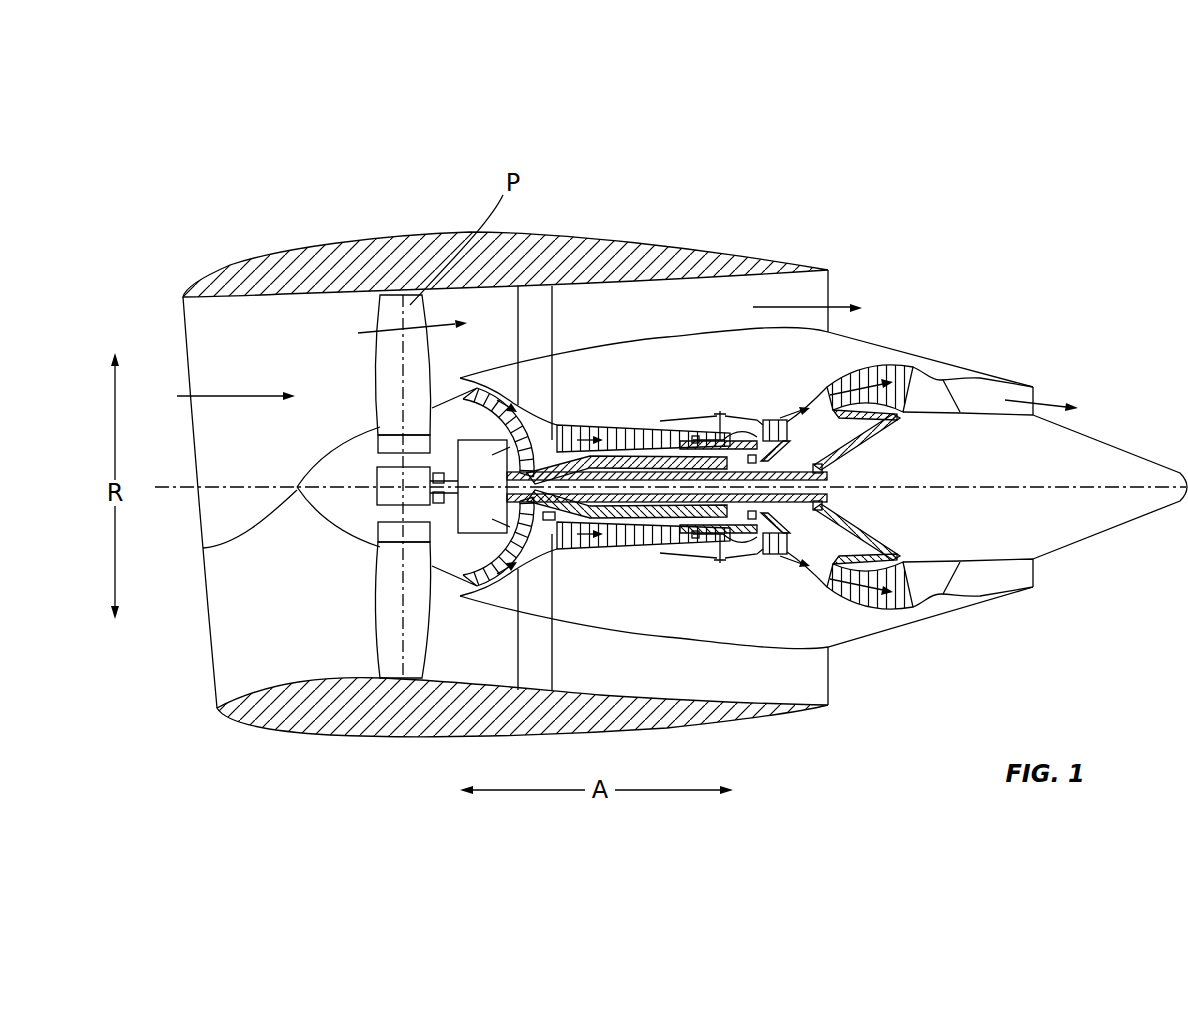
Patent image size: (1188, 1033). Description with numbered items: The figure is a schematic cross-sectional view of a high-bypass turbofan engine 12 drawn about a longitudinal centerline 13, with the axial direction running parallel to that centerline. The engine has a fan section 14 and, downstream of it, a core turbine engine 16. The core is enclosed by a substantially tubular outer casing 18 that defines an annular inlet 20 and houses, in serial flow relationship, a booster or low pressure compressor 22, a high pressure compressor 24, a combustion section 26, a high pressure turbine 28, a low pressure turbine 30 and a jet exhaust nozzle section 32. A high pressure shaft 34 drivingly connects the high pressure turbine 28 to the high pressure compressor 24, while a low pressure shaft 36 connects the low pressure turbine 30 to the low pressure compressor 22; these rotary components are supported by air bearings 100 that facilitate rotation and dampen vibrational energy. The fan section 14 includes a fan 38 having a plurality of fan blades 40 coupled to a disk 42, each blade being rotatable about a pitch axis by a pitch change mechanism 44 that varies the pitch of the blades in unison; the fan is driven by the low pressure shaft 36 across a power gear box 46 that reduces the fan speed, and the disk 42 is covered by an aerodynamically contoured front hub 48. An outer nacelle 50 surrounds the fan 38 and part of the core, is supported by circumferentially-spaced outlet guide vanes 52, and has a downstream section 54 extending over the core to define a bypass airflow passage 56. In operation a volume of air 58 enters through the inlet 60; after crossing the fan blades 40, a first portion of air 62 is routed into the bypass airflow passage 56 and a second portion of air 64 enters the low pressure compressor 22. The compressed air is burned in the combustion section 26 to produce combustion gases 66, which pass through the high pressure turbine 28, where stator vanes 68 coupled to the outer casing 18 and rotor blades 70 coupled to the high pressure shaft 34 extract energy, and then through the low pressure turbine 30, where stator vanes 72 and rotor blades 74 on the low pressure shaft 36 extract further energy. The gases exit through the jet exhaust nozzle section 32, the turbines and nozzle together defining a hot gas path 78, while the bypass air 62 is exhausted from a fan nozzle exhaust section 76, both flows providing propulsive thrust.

The turbofan engine 12 is at (960, 248).
The longitudinal centerline 13 is at (980, 483).
The fan section 14 is at (340, 316).
The core turbine engine 16 is at (661, 375).
The outer casing 18 is at (692, 640).
The annular inlet 20 is at (456, 588).
The low pressure compressor 22 is at (503, 537).
The high pressure compressor 24 is at (579, 548).
The combustion section 26 is at (732, 553).
The high pressure turbine 28 is at (797, 556).
The low pressure turbine 30 is at (904, 612).
The jet exhaust nozzle section 32 is at (960, 600).
The high pressure shaft 34 is at (774, 458).
The low pressure shaft 36 is at (840, 460).
The fan 38 is at (338, 540).
The fan blades 40 is at (377, 622).
The disk 42 is at (395, 445).
The pitch change mechanism 44 is at (377, 471).
The power gear box 46 is at (541, 427).
The front hub 48 is at (203, 549).
The outer nacelle 50 is at (418, 738).
The outlet guide vanes 52 is at (552, 313).
The downstream section of the nacelle 54 is at (778, 264).
The bypass airflow passage 56 is at (688, 320).
The volume of air 58 is at (232, 392).
The inlet 60 is at (212, 682).
The first portion of air 62 is at (380, 352).
The second portion of air 64 is at (455, 385).
The combustion gases 66 is at (867, 380).
The HP turbine stator vanes 68 is at (748, 553).
The HP turbine rotor blades 70 is at (807, 524).
The LP turbine stator vanes 72 is at (833, 586).
The LP turbine rotor blades 74 is at (845, 594).
The fan nozzle exhaust section 76 is at (828, 293).
The hot gas path 78 is at (812, 392).
The air bearings 100 is at (439, 472).